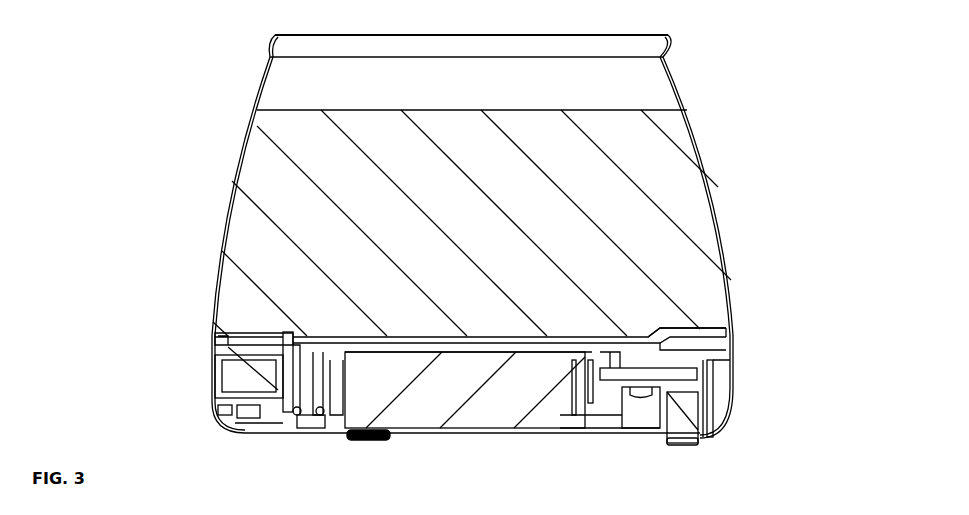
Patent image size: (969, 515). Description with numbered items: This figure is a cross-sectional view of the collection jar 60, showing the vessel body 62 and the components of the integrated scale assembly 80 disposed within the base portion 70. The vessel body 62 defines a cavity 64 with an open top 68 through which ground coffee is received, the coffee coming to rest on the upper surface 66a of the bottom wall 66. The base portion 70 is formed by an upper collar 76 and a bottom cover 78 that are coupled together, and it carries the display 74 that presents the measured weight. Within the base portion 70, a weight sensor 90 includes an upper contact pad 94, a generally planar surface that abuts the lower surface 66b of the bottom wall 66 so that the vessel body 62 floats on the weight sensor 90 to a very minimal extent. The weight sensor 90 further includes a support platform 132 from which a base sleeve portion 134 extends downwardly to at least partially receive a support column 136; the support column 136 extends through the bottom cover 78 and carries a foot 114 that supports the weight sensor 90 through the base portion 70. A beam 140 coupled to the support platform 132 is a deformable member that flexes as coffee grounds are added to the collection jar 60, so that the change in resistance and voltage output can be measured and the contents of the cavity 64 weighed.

The collection jar 60 is at (475, 256).
The vessel body 62 is at (688, 108).
The cavity 64 is at (320, 162).
The bottom wall 66 is at (482, 283).
The upper surface 66a is at (337, 337).
The lower surface 66b is at (735, 345).
The open top 68 is at (670, 37).
The base portion 70 is at (475, 390).
The display 74 is at (215, 375).
The upper collar 76 is at (212, 360).
The bottom cover 78 is at (237, 425).
The integrated scale assembly 80 is at (424, 392).
The weight sensor 90 is at (720, 380).
The upper contact pad 94 is at (650, 333).
The foot 114 is at (367, 442).
The support platform 132 is at (650, 404).
The base sleeve portion 134 is at (658, 394).
The support column 136 is at (717, 430).
The beam 140 is at (717, 373).